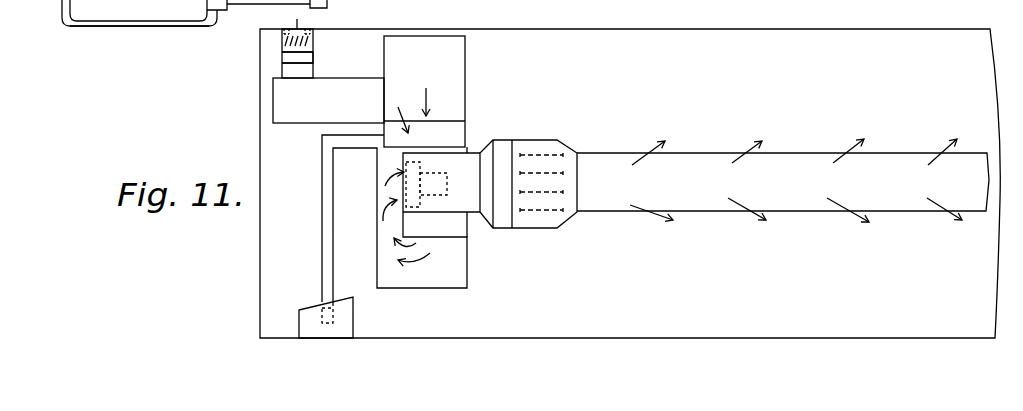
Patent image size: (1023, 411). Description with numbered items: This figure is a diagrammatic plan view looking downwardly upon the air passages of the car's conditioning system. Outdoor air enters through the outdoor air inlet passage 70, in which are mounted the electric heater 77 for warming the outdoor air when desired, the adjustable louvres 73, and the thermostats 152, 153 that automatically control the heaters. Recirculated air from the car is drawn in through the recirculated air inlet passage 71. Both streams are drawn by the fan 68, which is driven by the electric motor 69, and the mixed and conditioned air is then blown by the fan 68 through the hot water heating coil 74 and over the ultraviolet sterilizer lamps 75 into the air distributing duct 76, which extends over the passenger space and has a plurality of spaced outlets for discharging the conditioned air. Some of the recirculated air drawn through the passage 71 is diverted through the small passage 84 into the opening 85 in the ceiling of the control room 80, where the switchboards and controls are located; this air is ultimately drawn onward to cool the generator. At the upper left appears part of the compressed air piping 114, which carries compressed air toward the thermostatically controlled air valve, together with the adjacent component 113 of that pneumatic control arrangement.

The fuel tank body 113 is at (205, 3).
The piping 114 is at (137, 23).
The thermostat 152 is at (287, 28).
The thermostat 153 is at (313, 28).
The louvres 73 is at (282, 42).
The electric heater 77 is at (305, 57).
The outdoor air inlet passage 70 is at (283, 70).
The recirculated air inlet passage 71 is at (440, 61).
The small passage 84 is at (328, 160).
The fan 68 is at (407, 163).
The electric motor 69 is at (432, 175).
The hot water heating coil 74 is at (500, 143).
The ultraviolet sterilizer lamps 75 is at (540, 145).
The air distributing duct 76 is at (673, 165).
The control room 80 is at (357, 320).
The opening 85 is at (322, 320).